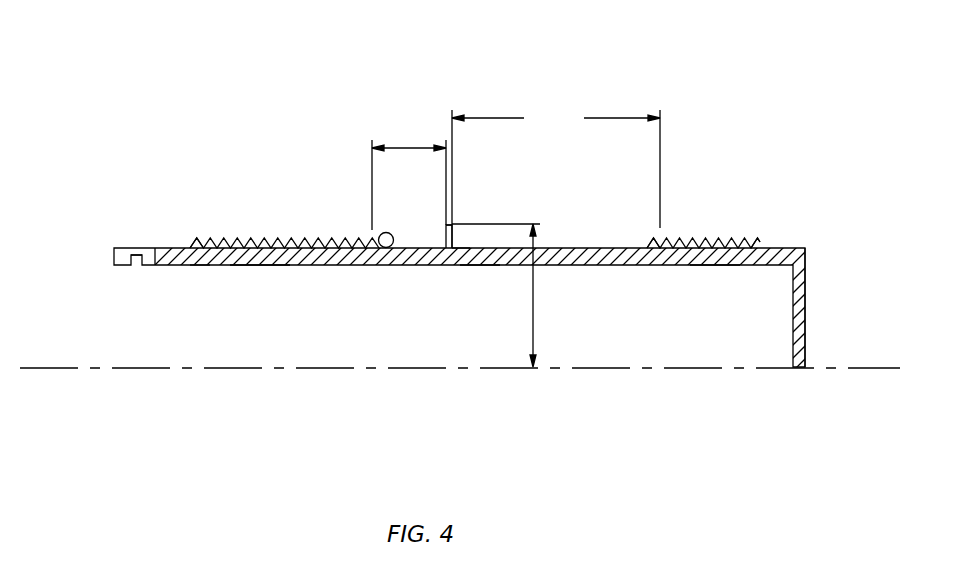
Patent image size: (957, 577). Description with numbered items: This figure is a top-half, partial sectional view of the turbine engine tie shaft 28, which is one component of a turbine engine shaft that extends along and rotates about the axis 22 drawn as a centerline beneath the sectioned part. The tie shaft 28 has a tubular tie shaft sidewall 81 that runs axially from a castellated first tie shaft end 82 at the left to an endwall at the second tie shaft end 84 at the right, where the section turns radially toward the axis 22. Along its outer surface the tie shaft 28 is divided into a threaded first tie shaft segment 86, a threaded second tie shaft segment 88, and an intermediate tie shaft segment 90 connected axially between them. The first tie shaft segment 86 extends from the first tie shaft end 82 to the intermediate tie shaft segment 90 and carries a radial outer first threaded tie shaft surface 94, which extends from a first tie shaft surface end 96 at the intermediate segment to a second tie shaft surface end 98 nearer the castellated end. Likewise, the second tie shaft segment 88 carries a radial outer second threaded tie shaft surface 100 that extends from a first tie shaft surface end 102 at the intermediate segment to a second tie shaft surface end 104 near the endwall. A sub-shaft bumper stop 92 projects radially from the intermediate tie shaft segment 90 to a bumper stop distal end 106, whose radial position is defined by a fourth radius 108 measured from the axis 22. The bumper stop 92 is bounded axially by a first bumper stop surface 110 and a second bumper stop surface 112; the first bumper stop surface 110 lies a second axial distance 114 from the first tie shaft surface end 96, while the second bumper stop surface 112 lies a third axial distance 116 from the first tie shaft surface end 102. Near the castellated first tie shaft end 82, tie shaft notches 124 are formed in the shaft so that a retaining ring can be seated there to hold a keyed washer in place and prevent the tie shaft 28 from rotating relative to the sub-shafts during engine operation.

The axis 22 is at (133, 370).
The turbine engine tie shaft 28 is at (182, 160).
The tie shaft sidewall 81 is at (198, 268).
The first tie shaft end 82 is at (113, 258).
The second tie shaft end 84 is at (808, 258).
The first tie shaft segment 86 is at (259, 278).
The second tie shaft segment 88 is at (712, 275).
The intermediate tie shaft segment 90 is at (478, 309).
The sub-shaft bumper stop 92 is at (457, 223).
The first threaded tie shaft surface 94 is at (262, 238).
The first tie shaft surface end 96 is at (384, 250).
The second tie shaft surface end 98 is at (190, 244).
The second threaded tie shaft surface 100 is at (706, 240).
The first tie shaft surface end 102 is at (642, 246).
The second tie shaft surface end 104 is at (755, 246).
The bumper stop distal end 106 is at (446, 225).
The fourth radius 108 is at (535, 312).
The first bumper stop surface 110 is at (447, 247).
The second bumper stop surface 112 is at (458, 247).
The second axial distance 114 is at (410, 146).
The third axial distance 116 is at (556, 167).
The tie shaft notches 124 is at (135, 266).